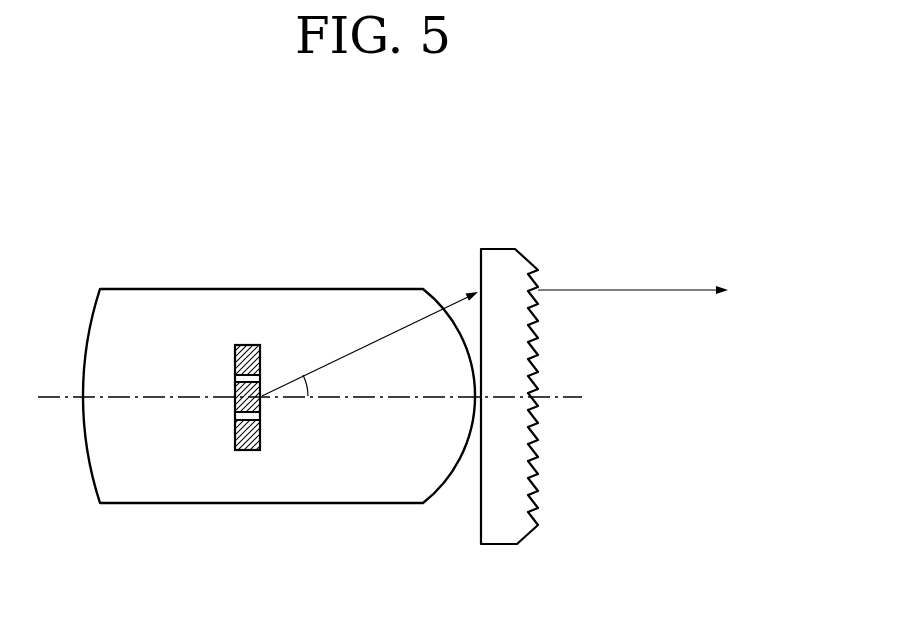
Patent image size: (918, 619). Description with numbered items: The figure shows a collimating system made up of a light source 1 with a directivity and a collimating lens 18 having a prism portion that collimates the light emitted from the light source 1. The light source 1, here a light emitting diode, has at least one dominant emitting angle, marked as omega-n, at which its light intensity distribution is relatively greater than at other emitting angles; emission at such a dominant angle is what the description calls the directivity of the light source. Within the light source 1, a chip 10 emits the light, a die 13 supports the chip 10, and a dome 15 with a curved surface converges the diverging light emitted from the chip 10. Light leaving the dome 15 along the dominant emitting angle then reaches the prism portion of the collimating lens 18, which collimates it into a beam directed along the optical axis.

The light source 1 is at (383, 335).
The chip 10 is at (233, 388).
The die 13 is at (250, 345).
The dome 15 is at (437, 300).
The collimating lens 18 is at (500, 258).